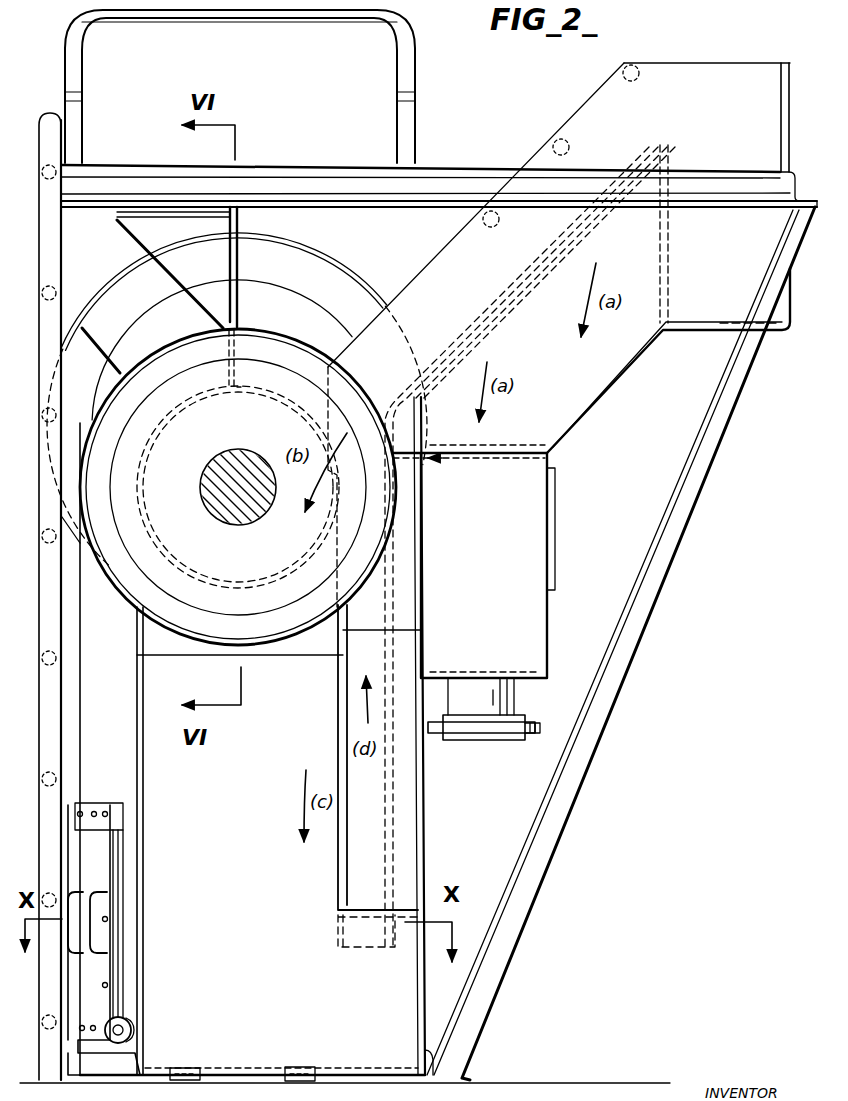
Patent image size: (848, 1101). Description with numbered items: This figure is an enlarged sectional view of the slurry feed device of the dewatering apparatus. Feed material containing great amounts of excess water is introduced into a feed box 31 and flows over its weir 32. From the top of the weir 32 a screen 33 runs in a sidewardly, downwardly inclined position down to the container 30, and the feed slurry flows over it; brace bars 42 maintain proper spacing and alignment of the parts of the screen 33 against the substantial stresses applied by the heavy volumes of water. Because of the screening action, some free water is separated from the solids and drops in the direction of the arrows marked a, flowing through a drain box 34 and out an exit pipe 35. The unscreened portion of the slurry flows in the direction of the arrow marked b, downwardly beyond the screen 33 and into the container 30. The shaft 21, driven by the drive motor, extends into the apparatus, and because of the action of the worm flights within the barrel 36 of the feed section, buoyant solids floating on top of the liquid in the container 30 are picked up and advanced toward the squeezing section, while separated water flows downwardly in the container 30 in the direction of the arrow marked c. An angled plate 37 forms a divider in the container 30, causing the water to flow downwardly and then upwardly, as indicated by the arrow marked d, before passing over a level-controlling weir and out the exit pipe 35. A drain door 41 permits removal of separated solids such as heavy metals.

The shaft 21 is at (257, 506).
The container 30 is at (232, 597).
The feed box 31 is at (754, 105).
The weir 32 is at (675, 251).
The screen 33 is at (577, 217).
The drain box 34 is at (567, 390).
The exit pipe 35 is at (478, 708).
The barrel 36 is at (237, 439).
The angled plate 37 is at (367, 857).
The drain door 41 is at (100, 997).
The brace bars 42 is at (560, 138).